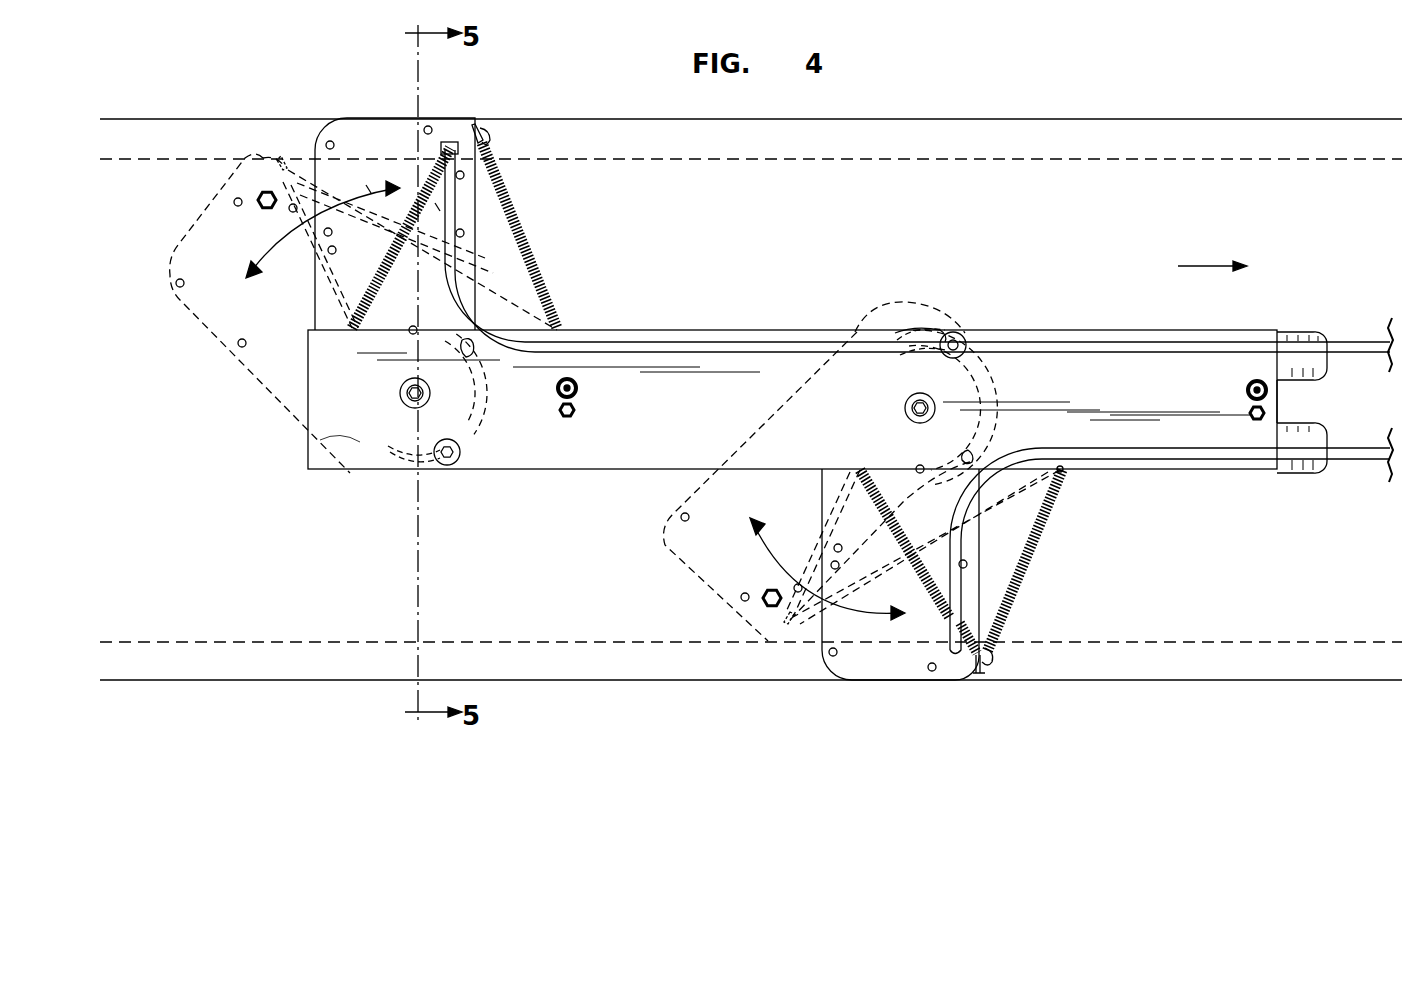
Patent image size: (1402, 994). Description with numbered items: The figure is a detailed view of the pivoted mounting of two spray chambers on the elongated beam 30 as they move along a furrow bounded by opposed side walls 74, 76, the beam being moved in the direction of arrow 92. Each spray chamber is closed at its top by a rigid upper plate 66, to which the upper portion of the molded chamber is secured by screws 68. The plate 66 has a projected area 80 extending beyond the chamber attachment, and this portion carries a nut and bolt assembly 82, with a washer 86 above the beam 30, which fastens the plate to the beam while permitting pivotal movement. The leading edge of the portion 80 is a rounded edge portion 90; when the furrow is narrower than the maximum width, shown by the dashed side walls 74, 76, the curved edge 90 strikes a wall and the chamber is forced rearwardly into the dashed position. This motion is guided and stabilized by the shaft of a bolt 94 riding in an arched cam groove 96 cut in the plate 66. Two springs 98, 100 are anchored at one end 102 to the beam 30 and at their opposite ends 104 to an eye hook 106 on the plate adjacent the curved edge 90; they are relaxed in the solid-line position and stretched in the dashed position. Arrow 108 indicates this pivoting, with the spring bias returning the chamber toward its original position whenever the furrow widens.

The elongated beam 30 is at (627, 430).
The upper plate 66 is at (475, 240).
The screws 68 is at (178, 290).
The furrow side wall 74 is at (1290, 642).
The furrow side wall 76 is at (1101, 119).
The projected area 80 is at (345, 445).
The nut and bolt assembly 82 is at (895, 420).
The washer 86 is at (400, 393).
The rounded edge portion 90 is at (297, 150).
The arrow 92 is at (1203, 266).
The bolt 94 is at (450, 468).
The arched cam groove 96 is at (480, 425).
The spring 98 is at (470, 200).
The spring 100 is at (437, 207).
The spring end 102 is at (345, 345).
The opposite spring end 104 is at (1000, 652).
The eye hook 106 is at (477, 135).
The arrow 108 is at (366, 190).